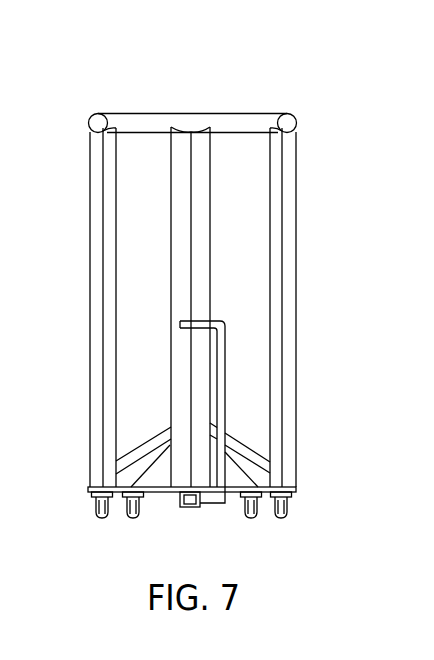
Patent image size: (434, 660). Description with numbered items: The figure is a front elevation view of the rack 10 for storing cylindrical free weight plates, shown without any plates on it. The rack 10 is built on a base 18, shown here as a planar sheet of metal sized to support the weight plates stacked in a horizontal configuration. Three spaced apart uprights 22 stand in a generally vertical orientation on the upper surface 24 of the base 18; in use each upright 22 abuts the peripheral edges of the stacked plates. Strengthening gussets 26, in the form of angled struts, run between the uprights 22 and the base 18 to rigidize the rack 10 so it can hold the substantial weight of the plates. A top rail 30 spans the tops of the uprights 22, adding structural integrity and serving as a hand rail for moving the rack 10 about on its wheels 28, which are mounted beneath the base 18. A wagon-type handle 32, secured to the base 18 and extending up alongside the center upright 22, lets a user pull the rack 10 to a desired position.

The rack 10 is at (272, 82).
The top rail 30 is at (130, 125).
The uprights 22 is at (108, 258).
The wagon-type handle 32 is at (222, 355).
The strengthening gussets 26 is at (160, 467).
The upper surface 24 is at (258, 487).
The base 18 is at (295, 488).
The wheels 28 is at (102, 519).